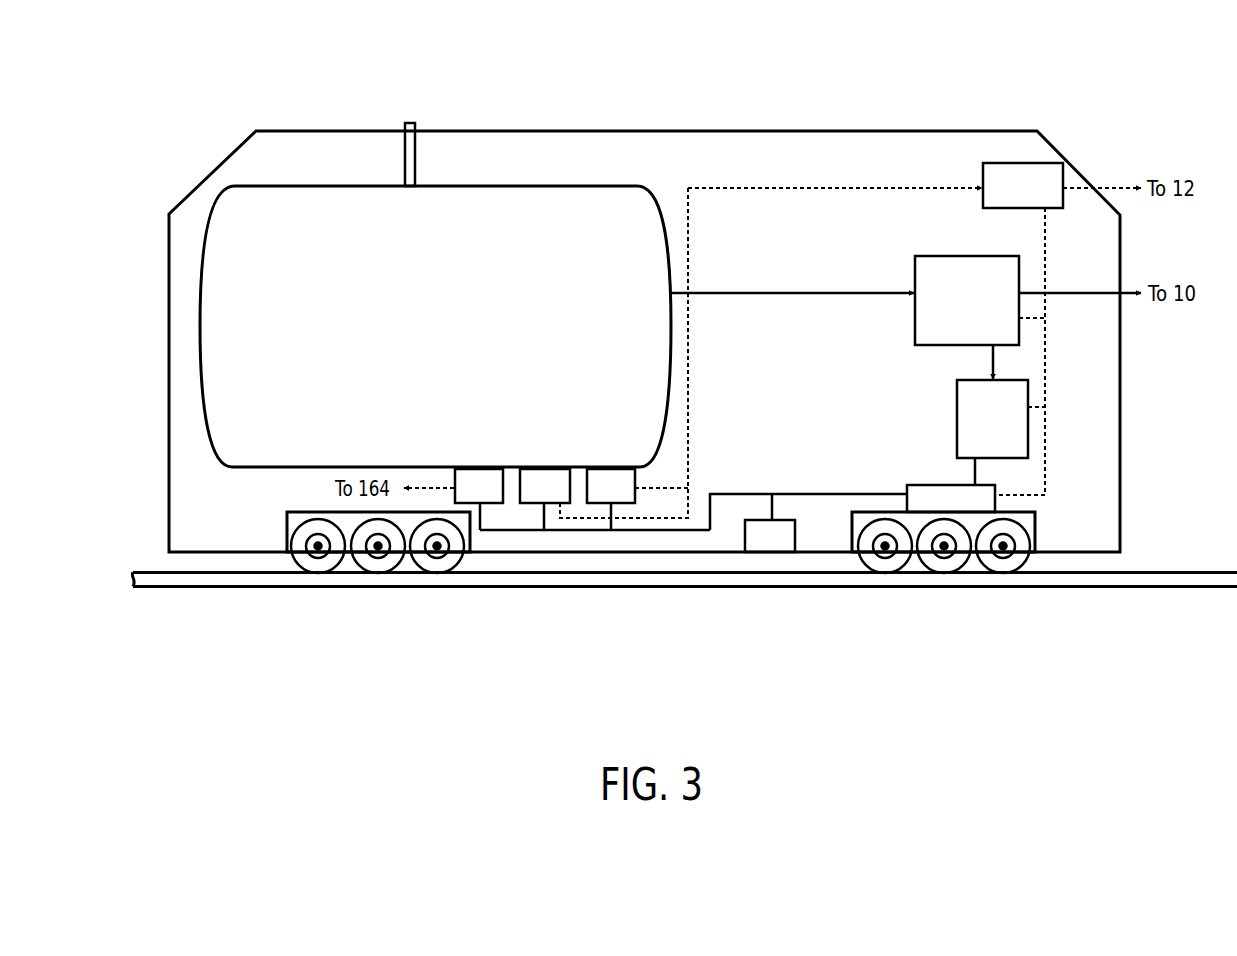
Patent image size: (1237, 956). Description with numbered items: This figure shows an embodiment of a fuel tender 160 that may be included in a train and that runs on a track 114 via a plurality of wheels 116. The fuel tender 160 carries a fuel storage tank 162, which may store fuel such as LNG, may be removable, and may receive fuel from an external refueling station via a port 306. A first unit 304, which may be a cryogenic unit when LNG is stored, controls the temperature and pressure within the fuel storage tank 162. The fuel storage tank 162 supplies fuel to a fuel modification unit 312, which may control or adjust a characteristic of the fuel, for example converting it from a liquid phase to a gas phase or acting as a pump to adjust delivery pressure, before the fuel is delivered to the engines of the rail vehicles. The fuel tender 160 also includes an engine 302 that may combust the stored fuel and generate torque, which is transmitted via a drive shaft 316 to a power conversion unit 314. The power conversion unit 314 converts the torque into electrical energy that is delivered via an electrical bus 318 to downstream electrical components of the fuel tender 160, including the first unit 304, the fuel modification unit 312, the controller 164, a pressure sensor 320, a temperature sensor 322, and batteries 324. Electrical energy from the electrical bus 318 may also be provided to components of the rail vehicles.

The fuel tender 160 is at (305, 131).
The fuel storage tank 162 is at (444, 334).
The port 306 is at (416, 177).
The wheels 116 is at (993, 565).
The rail 114 is at (1177, 588).
The controller 164 is at (1039, 197).
The fuel modification unit 312 is at (983, 311).
The engine 302 is at (1008, 430).
The drive shaft 316 is at (975, 482).
The power conversion unit 314 is at (967, 509).
The electrical bus 318 is at (745, 494).
The batteries 324 is at (786, 547).
The first unit 304 is at (495, 497).
The pressure sensor 320 is at (561, 497).
The temperature sensor 322 is at (627, 497).